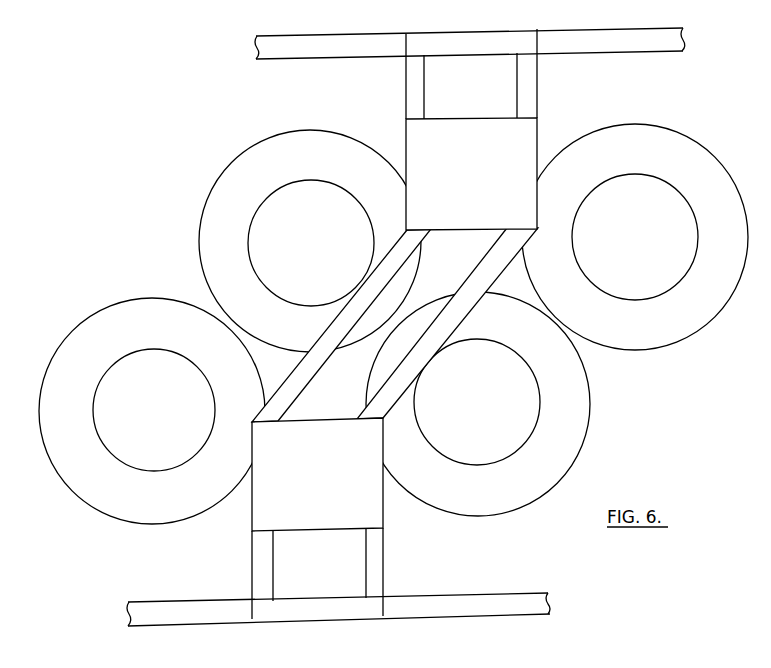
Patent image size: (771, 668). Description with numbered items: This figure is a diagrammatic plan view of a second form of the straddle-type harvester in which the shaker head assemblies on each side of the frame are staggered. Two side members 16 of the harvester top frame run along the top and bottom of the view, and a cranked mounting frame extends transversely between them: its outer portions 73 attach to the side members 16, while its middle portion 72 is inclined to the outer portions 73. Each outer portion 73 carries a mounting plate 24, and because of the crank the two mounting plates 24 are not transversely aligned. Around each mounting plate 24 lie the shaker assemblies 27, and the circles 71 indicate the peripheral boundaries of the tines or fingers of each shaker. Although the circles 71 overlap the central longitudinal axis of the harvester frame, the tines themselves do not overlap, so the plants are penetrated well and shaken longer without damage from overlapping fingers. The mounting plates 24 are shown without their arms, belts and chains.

The side members 16 is at (597, 45).
The mounting plate 24 is at (394, 324).
The shaker assembly 27 is at (395, 322).
The circles 71 is at (198, 251).
The middle portion 72 is at (479, 270).
The outer portions 73 is at (406, 138).